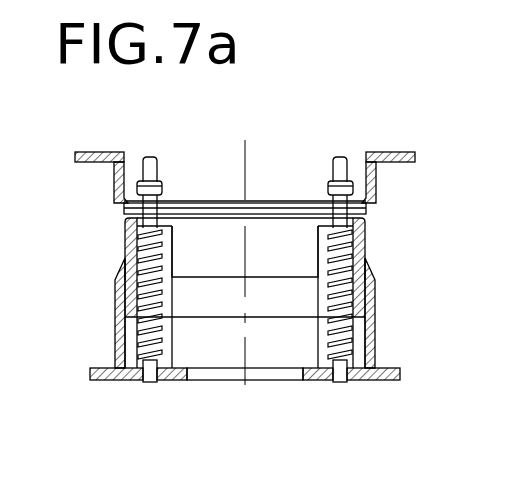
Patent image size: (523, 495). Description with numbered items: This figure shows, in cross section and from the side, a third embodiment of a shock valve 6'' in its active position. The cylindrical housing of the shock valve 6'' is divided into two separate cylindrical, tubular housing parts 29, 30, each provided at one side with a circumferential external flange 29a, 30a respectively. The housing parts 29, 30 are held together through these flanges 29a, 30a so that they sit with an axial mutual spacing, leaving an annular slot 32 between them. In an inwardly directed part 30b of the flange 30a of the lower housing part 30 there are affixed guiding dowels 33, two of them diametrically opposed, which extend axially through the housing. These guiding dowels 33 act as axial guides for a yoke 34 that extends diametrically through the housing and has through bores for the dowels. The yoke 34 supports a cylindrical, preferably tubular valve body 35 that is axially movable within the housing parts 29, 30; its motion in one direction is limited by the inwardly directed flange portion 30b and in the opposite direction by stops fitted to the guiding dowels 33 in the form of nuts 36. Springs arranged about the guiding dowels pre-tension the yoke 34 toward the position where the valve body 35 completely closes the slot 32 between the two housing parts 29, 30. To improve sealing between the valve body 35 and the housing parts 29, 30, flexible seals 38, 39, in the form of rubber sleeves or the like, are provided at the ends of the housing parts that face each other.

The shock valve 6'' is at (269, 259).
The tubular housing part 29 is at (377, 188).
The external flange 29a is at (402, 152).
The tubular housing part 30 is at (377, 302).
The external flange 30a is at (390, 368).
The inwardly directed flange portion 30b is at (178, 355).
The annular slot 32 is at (352, 212).
The guiding dowel 33 is at (341, 373).
The yoke 34 is at (265, 250).
The valve body 35 is at (118, 322).
The nut 36 is at (160, 186).
The flexible seal 38 is at (120, 203).
The flexible seal 39 is at (123, 263).